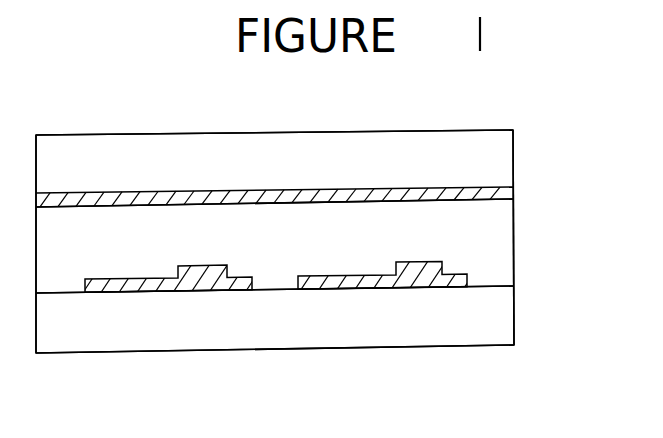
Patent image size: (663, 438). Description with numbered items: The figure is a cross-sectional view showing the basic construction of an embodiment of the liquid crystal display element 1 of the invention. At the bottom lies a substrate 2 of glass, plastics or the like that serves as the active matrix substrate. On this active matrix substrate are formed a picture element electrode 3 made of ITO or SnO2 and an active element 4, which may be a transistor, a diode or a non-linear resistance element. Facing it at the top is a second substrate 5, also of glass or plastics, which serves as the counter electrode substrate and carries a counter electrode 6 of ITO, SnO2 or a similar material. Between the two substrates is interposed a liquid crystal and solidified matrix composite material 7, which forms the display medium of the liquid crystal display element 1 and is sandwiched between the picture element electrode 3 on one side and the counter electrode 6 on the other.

The liquid crystal display element 1 is at (241, 132).
The substrate 2 is at (496, 315).
The picture element electrode 3 is at (325, 290).
The active element 4 is at (433, 287).
The substrate 5 is at (490, 161).
The counter electrode 6 is at (500, 191).
The liquid crystal and solidified matrix composite material 7 is at (483, 238).